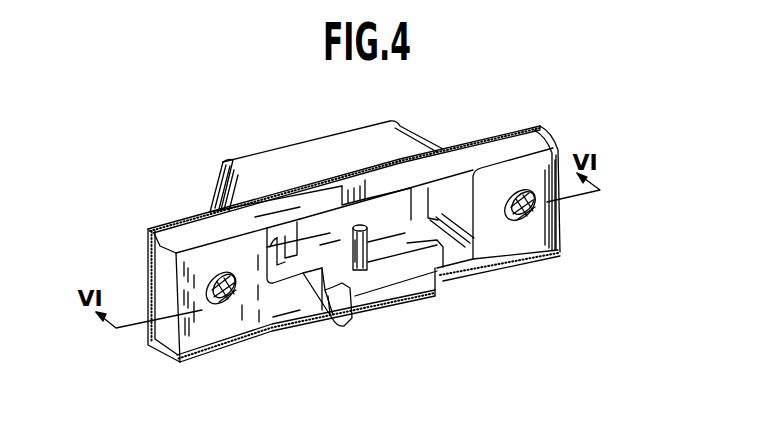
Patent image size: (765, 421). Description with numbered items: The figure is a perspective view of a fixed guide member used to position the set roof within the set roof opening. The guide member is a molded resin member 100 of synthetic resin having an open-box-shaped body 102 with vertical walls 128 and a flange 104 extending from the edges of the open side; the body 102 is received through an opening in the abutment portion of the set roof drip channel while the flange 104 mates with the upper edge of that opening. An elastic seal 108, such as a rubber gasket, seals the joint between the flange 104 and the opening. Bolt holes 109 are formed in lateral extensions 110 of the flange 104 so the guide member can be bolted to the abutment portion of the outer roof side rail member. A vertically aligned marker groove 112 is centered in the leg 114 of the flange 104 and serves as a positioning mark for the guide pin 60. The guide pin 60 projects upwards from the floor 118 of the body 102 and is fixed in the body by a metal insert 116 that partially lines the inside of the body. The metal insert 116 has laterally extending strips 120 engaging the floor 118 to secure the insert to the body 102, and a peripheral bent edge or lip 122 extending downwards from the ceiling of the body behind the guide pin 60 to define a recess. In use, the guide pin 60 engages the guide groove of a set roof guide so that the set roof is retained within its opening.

The guide pin 60 is at (370, 253).
The molded resin member 100 is at (466, 125).
The open-box-shaped body 102 is at (300, 142).
The flange 104 is at (418, 180).
The elastic seal 108 is at (148, 238).
The bolt holes 109 is at (208, 312).
The lateral extensions 110 is at (217, 333).
The marker groove 112 is at (348, 184).
The leg 114 is at (285, 217).
The metal insert 116 is at (321, 270).
The floor 118 is at (284, 307).
The laterally extending strips 120 is at (262, 262).
The peripheral bent edge or lip 122 is at (330, 243).
The vertical walls 128 is at (222, 195).